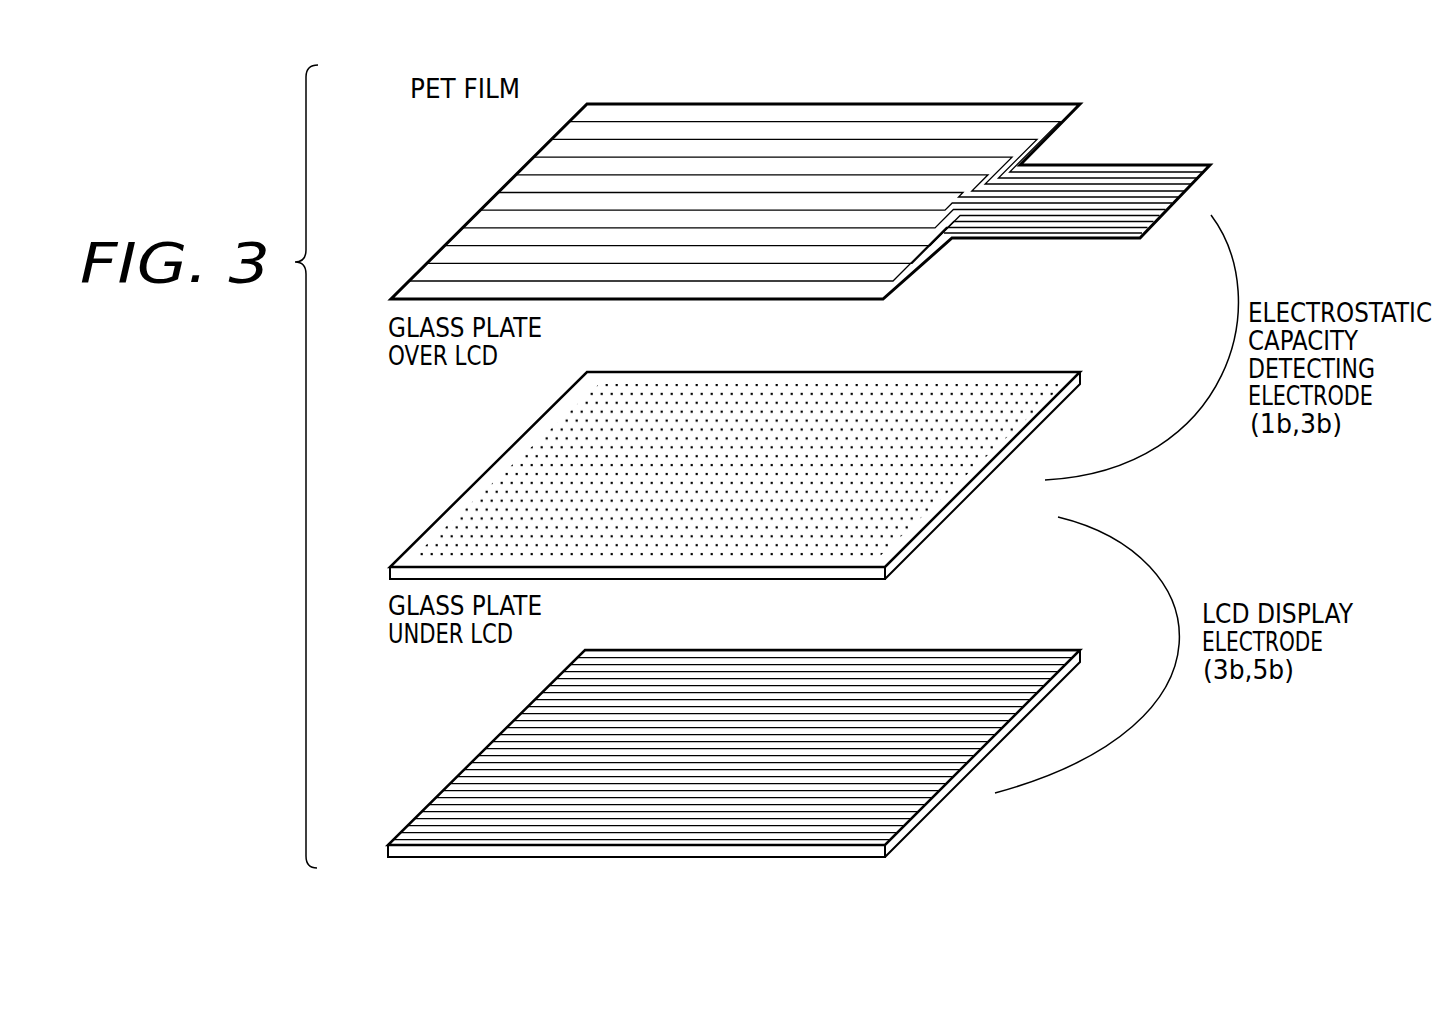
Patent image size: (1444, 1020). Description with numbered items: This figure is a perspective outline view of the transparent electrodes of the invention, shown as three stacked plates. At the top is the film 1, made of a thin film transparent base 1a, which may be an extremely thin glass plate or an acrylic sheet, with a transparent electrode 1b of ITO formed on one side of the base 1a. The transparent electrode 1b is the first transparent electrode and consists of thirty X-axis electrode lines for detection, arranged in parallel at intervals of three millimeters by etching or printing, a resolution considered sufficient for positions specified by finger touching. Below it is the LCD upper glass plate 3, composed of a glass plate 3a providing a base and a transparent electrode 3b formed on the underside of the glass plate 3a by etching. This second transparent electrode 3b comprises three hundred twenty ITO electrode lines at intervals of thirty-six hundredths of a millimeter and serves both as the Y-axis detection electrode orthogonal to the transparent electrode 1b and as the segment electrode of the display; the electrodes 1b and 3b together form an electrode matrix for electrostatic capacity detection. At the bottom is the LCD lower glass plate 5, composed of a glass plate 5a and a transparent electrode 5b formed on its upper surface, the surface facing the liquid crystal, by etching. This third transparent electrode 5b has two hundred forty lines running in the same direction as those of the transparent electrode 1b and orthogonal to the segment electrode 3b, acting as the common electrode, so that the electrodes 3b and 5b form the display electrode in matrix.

The film 1 is at (800, 184).
The transparent base 1a is at (1035, 98).
The transparent electrode 1b is at (960, 135).
The LCD upper glass plate 3 is at (739, 459).
The glass plate 3a is at (1037, 367).
The transparent electrode 3b is at (962, 402).
The LCD lower glass plate 5 is at (738, 738).
The glass plate 5a is at (1037, 647).
The transparent electrode 5b is at (960, 677).